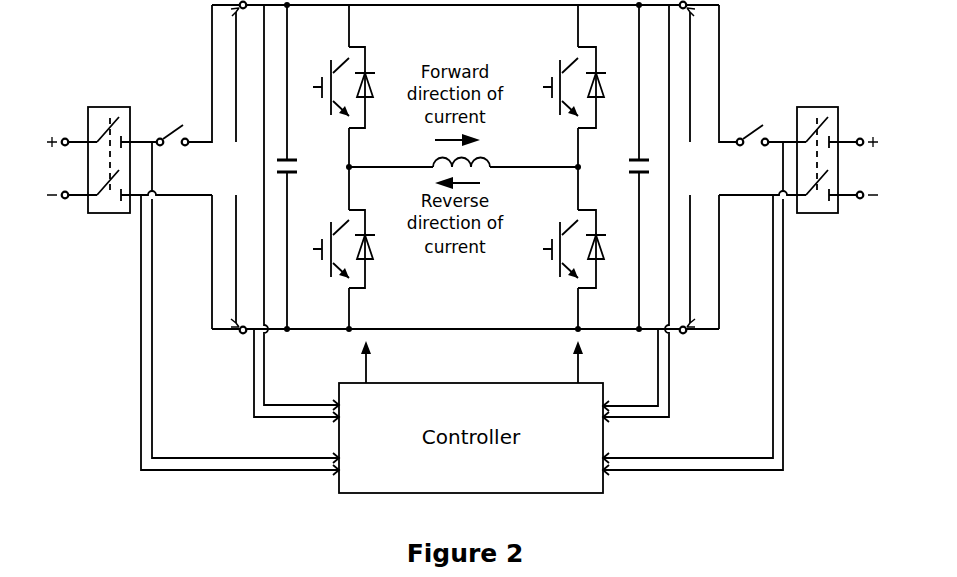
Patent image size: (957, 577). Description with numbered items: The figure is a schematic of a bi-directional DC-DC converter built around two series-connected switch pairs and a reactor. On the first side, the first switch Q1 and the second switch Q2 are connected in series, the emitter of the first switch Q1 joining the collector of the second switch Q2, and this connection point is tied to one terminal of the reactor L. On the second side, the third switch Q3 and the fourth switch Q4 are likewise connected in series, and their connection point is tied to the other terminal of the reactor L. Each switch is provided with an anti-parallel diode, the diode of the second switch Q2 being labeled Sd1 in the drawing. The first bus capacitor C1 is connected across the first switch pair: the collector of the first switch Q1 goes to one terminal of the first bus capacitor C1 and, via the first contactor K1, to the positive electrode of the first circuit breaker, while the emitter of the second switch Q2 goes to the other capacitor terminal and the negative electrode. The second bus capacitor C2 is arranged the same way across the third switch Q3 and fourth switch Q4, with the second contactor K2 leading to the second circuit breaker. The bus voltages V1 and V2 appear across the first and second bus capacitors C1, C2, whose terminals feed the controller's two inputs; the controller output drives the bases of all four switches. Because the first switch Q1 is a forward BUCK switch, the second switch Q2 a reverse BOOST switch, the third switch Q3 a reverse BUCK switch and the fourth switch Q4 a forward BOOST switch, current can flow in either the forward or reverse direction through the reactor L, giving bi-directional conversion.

The first switch Q1 is at (342, 74).
The second switch Q2 is at (327, 264).
The third switch Q3 is at (582, 74).
The fourth switch Q4 is at (582, 263).
The anti-parallel diode of second switching transistor Sd1 is at (368, 237).
The first bus capacitor C1 is at (298, 167).
The second bus capacitor C2 is at (628, 167).
The reactor L is at (448, 155).
The first contactor K1 is at (173, 125).
The second contactor K2 is at (753, 125).
The first side voltage V1 is at (235, 168).
The second side voltage V2 is at (691, 168).